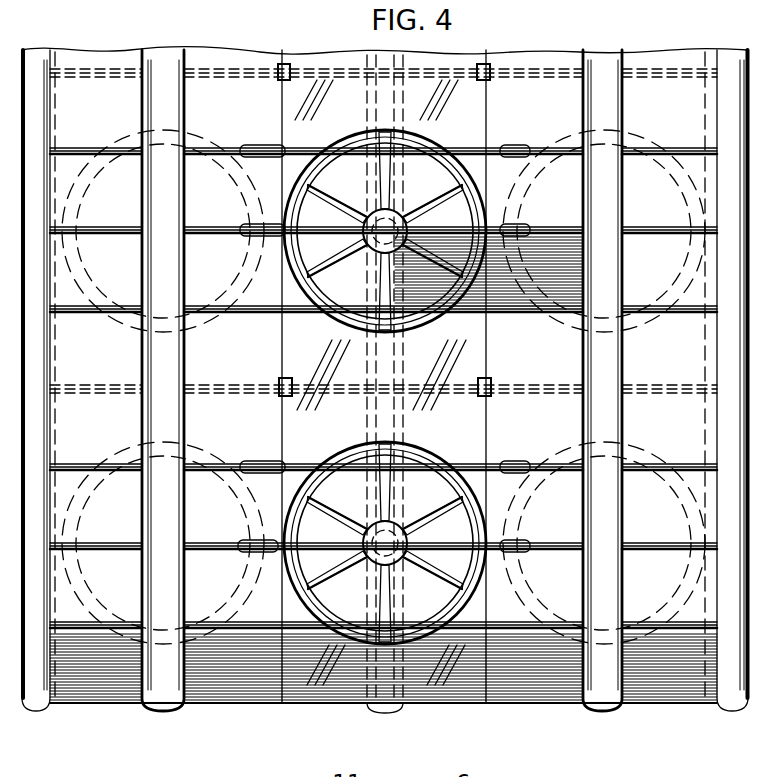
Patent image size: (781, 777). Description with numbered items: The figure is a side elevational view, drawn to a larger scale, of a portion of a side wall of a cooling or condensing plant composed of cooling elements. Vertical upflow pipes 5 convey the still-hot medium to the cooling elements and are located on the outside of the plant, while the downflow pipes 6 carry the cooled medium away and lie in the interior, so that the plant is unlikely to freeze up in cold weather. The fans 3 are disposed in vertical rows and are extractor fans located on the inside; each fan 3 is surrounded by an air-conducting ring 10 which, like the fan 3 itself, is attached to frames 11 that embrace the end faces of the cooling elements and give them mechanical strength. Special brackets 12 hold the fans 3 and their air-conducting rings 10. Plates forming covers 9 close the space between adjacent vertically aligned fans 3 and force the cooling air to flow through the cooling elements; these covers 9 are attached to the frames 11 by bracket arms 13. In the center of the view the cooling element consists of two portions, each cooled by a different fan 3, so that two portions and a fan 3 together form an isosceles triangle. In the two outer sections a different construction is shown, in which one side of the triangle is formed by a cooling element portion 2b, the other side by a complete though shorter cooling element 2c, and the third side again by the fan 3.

The cooling element portion 2b is at (238, 690).
The complete, though shorter cooling element 2c is at (103, 690).
The fan 3 is at (318, 565).
The upflow pipe 5 is at (162, 58).
The downflow pipe 6 is at (34, 52).
The cover 9 is at (328, 75).
The air-conducting ring 10 is at (458, 482).
The frame 11 is at (232, 462).
The bracket 12 is at (262, 460).
The bracket arm 13 is at (485, 65).